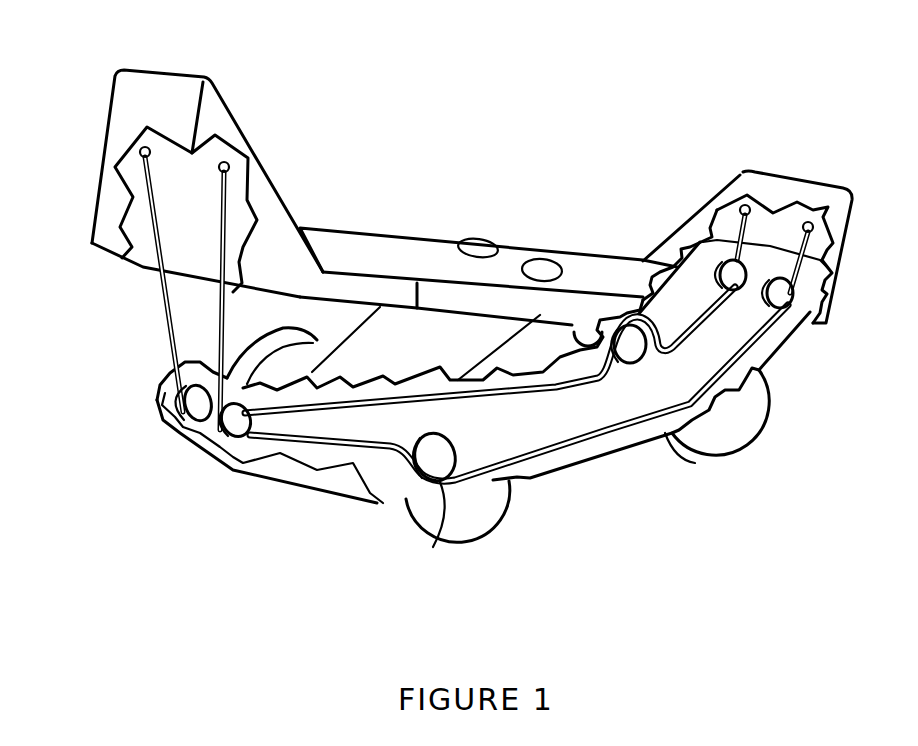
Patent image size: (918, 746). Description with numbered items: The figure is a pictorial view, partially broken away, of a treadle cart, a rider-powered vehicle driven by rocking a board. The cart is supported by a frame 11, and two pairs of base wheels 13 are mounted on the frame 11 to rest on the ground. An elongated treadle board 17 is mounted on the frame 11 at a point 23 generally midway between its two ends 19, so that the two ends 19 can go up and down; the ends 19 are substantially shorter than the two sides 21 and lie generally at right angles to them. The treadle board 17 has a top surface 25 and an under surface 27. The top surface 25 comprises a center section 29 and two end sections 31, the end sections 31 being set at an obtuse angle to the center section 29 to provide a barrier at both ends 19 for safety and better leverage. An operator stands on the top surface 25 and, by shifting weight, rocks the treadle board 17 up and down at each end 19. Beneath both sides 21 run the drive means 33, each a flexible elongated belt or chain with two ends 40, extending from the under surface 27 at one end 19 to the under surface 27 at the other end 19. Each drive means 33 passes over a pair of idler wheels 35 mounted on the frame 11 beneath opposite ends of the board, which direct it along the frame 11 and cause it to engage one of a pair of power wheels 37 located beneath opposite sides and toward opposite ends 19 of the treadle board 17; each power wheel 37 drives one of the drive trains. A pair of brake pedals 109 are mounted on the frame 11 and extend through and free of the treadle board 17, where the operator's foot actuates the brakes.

The frame 11 is at (523, 478).
The base wheels 13 is at (450, 533).
The treadle board 17 is at (347, 230).
The ends 19 is at (153, 70).
The sides 21 is at (513, 257).
The point 23 is at (593, 340).
The top surface 25 is at (422, 260).
The under surface 27 is at (143, 267).
The center section 29 is at (598, 267).
The end sections 31 is at (253, 157).
The drive means 33 is at (163, 317).
The idler wheels 35 is at (233, 427).
The power wheels 37 is at (423, 533).
The ends 40 is at (140, 146).
The brake pedals 109 is at (480, 237).